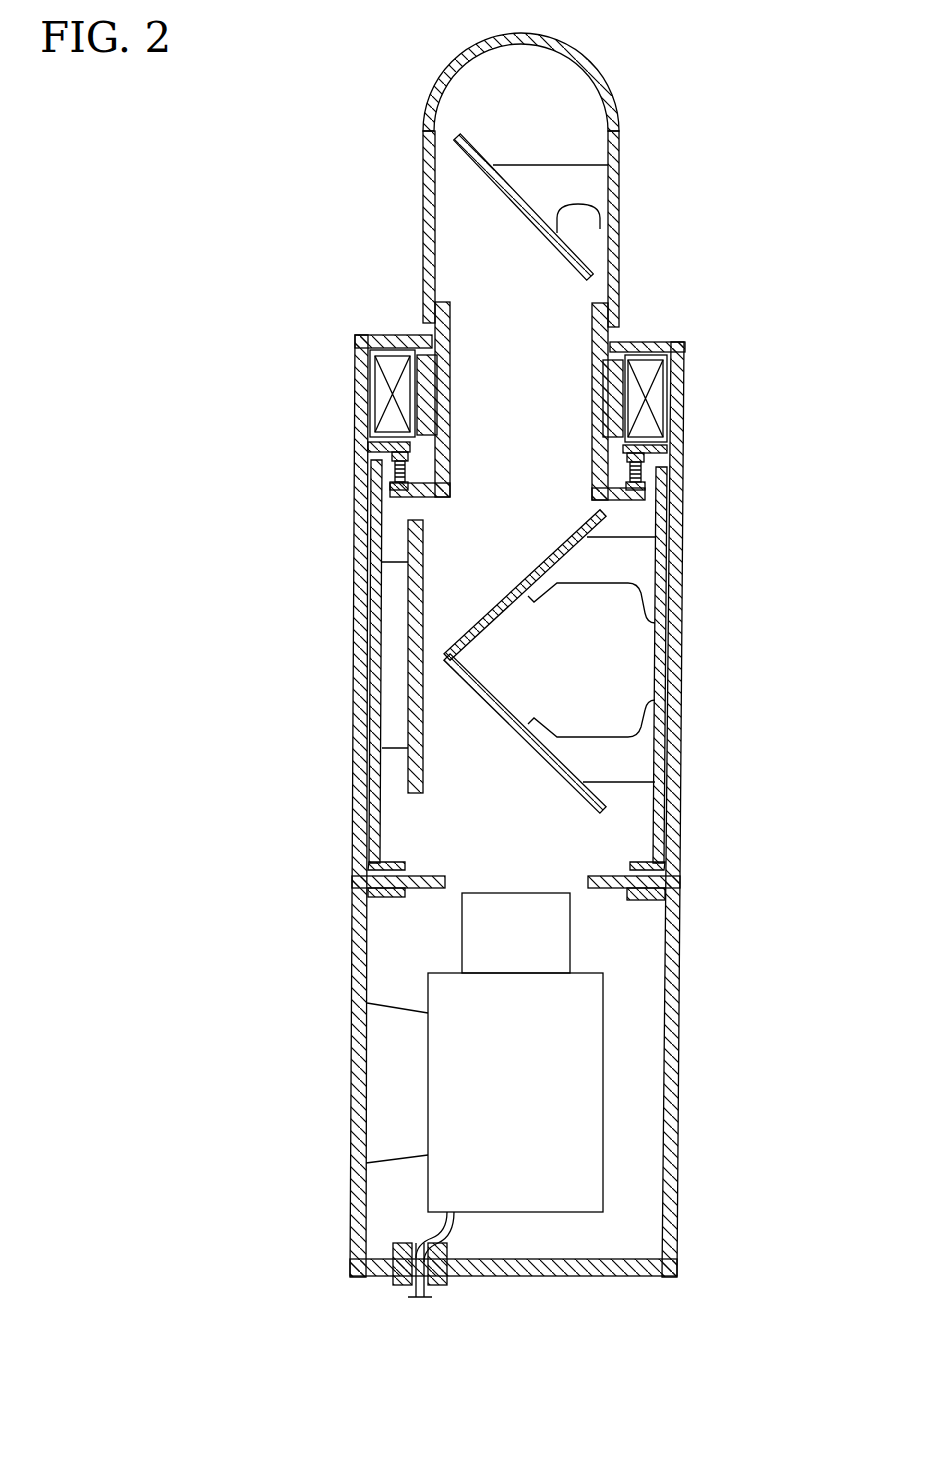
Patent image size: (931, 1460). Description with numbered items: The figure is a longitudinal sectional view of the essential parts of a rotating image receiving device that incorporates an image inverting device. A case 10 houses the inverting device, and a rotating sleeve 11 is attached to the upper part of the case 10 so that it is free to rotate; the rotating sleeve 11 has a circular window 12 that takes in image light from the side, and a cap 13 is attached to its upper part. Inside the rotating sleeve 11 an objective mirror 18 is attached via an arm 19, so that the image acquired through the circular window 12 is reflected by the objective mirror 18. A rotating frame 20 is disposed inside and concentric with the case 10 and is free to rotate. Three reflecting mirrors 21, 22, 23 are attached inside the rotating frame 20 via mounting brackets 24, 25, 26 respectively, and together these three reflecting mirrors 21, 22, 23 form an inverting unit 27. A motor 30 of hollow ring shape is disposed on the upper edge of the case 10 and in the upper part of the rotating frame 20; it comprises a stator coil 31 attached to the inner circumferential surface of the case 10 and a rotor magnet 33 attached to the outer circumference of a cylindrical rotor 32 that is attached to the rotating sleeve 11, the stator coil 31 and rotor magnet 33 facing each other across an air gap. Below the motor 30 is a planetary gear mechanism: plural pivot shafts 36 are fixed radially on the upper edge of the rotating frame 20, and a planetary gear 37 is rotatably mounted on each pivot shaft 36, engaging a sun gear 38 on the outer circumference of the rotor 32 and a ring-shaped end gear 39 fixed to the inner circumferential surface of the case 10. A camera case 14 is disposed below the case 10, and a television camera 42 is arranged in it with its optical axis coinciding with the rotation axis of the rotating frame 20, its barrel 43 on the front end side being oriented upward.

The case 10 is at (680, 672).
The rotating sleeve 11 is at (622, 213).
The circular window 12 is at (436, 298).
The cap 13 is at (600, 64).
The camera case 14 is at (680, 1126).
The objective mirror 18 is at (507, 193).
The arm 19 is at (552, 183).
The rotating frame 20 is at (682, 597).
The reflecting mirror 21 is at (513, 597).
The reflecting mirror 22 is at (418, 730).
The reflecting mirror 23 is at (542, 752).
The mounting bracket 24 is at (587, 568).
The mounting bracket 25 is at (396, 625).
The mounting bracket 26 is at (592, 747).
The inverting unit 27 is at (710, 502).
The motor 30 is at (340, 356).
The stator coil 31 is at (384, 398).
The rotor 32 is at (445, 393).
The rotor magnet 33 is at (598, 385).
The pivot shaft 36 is at (394, 470).
The planetary gear 37 is at (405, 447).
The sun gear 38 is at (398, 492).
The end gear 39 is at (362, 447).
The television camera 42 is at (587, 1047).
The barrel 43 is at (478, 932).